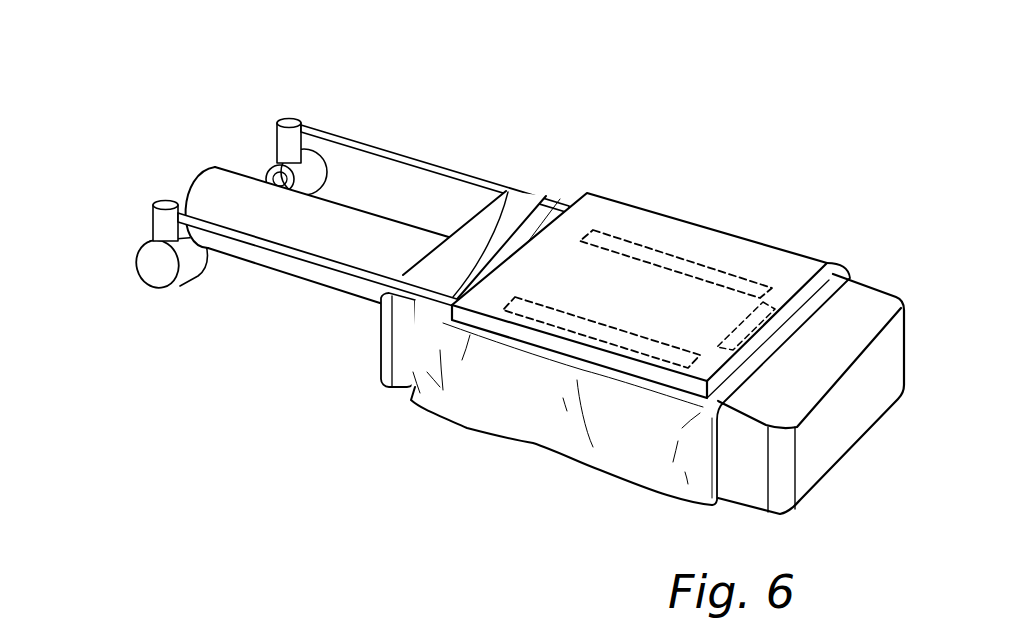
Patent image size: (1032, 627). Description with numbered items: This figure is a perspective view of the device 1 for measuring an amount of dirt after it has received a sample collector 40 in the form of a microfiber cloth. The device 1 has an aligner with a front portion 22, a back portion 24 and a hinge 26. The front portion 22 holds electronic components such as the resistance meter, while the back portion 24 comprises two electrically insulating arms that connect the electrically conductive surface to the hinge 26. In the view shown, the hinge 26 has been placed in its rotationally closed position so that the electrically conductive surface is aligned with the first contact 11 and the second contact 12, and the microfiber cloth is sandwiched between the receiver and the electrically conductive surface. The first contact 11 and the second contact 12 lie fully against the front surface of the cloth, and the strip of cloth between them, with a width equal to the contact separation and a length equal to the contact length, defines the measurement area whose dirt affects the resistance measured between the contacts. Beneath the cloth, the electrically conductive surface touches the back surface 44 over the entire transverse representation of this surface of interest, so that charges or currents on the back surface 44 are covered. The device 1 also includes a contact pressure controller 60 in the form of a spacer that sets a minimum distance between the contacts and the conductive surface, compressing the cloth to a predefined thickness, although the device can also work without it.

The device 1 is at (547, 95).
The first contact 11 is at (601, 328).
The second contact 12 is at (687, 262).
The front portion 22 is at (822, 512).
The back portion 24 is at (417, 133).
The hinge 26 is at (143, 287).
The sample collector 40 is at (522, 445).
The back surface 44 is at (453, 395).
The contact pressure controller 60 is at (835, 270).